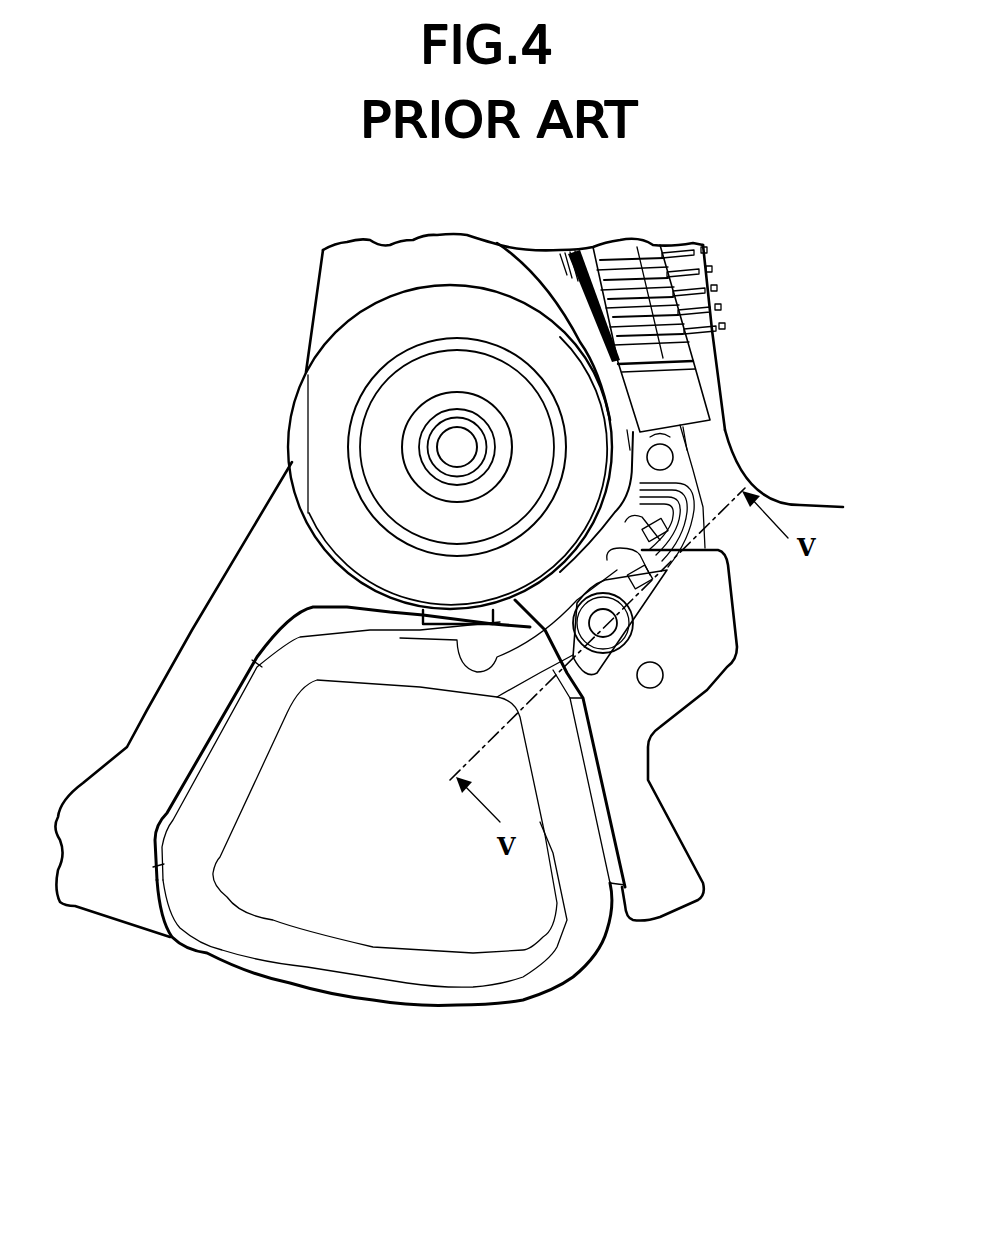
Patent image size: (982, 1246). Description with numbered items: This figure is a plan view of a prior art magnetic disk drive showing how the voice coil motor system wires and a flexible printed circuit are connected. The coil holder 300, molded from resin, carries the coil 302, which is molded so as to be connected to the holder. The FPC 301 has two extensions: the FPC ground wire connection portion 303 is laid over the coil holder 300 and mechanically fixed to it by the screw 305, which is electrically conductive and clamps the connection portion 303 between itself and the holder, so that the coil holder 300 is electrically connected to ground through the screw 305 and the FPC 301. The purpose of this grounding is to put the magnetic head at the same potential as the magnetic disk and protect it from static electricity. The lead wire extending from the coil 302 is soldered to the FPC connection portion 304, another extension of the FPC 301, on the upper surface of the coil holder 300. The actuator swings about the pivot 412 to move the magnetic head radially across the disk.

The coil holder 300 is at (147, 710).
The FPC 301 is at (820, 503).
The coil 302 is at (337, 993).
The FPC ground wire connection portion 303 is at (632, 640).
The FPC connection portion 304 is at (665, 580).
The screw 305 is at (632, 630).
The pivot 412 is at (318, 402).